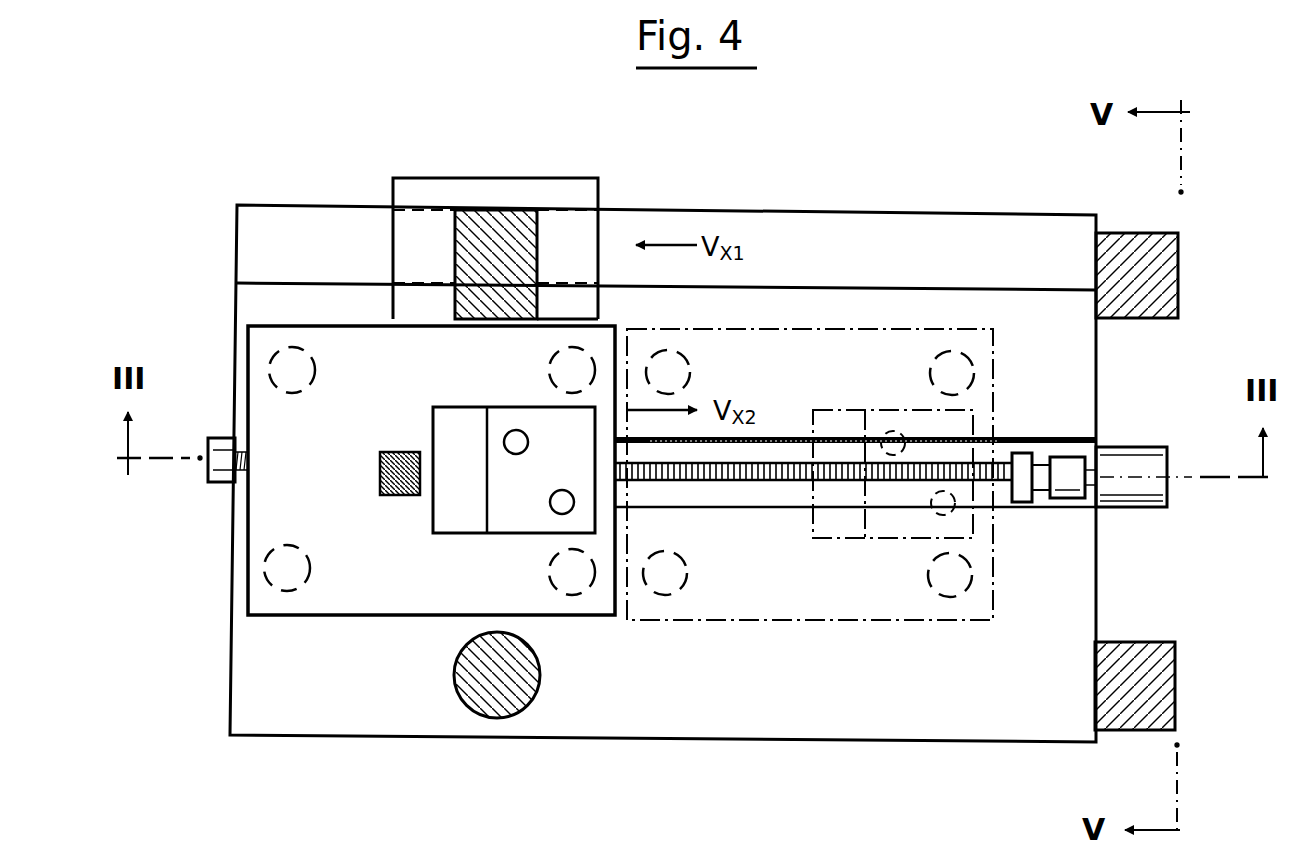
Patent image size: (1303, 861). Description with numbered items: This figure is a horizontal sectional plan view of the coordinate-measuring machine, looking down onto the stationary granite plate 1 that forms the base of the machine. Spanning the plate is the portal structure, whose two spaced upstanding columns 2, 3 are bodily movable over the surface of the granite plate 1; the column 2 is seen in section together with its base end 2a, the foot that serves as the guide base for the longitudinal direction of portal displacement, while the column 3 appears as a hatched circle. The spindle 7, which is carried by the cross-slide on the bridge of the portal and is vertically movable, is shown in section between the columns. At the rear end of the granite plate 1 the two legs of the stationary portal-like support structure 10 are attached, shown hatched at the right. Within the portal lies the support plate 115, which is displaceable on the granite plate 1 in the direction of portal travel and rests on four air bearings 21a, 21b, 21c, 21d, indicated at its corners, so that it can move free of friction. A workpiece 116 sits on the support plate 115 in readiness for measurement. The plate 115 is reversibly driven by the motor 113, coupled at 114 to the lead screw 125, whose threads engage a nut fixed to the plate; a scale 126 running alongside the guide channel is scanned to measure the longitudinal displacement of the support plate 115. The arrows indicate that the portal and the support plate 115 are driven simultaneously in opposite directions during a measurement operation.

The granite plate 1 is at (1047, 699).
The portal column 2 is at (522, 232).
The base end of portal column 2a is at (572, 240).
The portal column 3 is at (497, 683).
The spindle 7 is at (380, 472).
The support structure 10 is at (1128, 252).
The air bearing 21a is at (312, 368).
The air bearing 21b is at (550, 372).
The air bearing 21c is at (309, 563).
The air bearing 21d is at (573, 593).
The motor 113 is at (1138, 510).
The coupling 114 is at (1068, 468).
The support plate 115 is at (594, 608).
The workpiece 116 is at (458, 512).
The lead screw 125 is at (955, 440).
The scale 126 is at (790, 437).